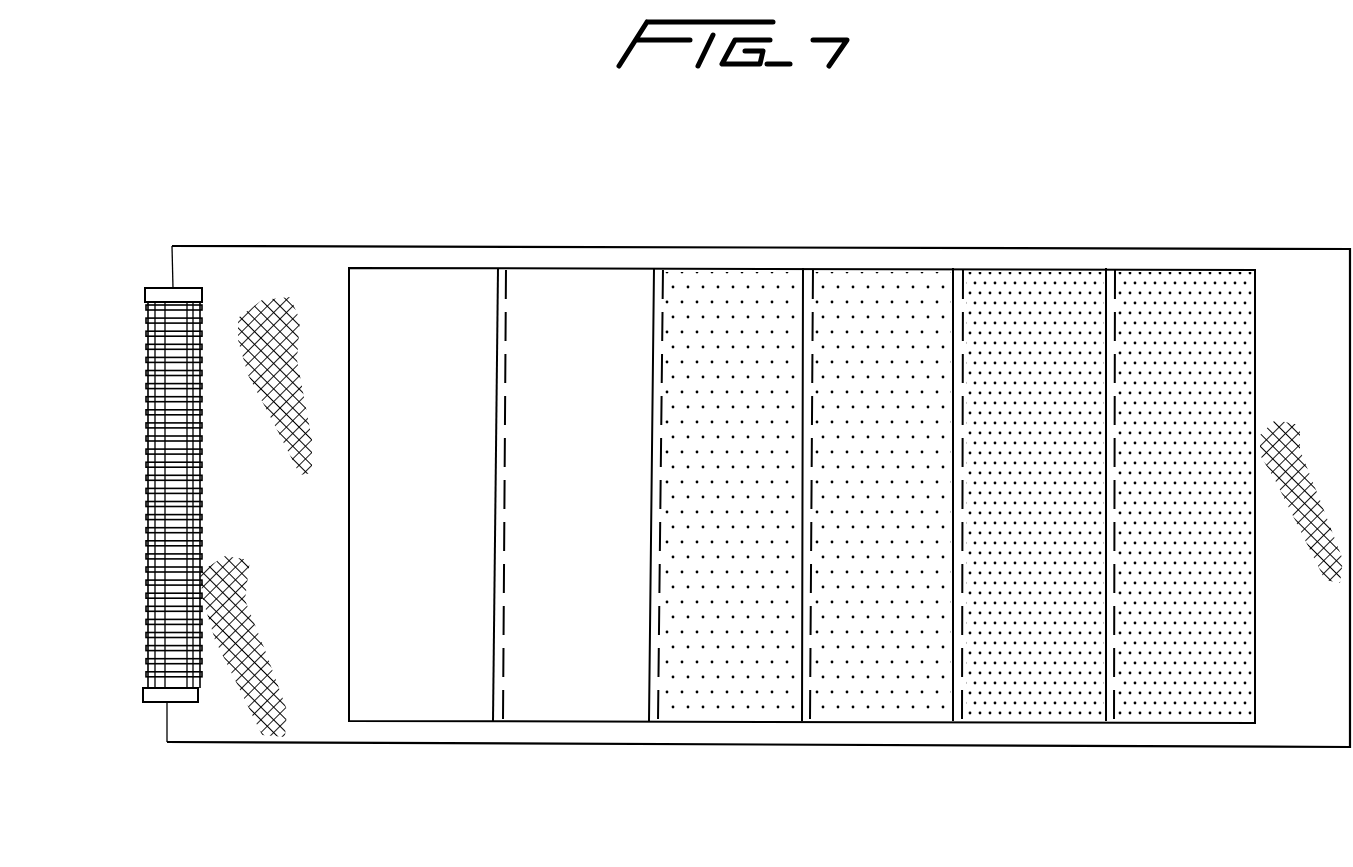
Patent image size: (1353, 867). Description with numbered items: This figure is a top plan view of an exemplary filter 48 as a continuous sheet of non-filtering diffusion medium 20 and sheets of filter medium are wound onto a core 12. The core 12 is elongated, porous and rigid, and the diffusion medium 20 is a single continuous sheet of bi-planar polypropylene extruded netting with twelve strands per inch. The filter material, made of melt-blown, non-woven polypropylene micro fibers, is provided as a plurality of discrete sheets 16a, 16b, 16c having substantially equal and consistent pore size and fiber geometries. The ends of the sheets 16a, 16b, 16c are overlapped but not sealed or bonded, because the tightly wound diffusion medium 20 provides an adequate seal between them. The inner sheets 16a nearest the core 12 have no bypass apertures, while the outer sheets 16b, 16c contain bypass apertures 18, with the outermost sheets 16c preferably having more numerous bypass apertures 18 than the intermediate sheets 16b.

The core 12 is at (143, 675).
The inner sheets of filter medium 16a is at (580, 268).
The intermediate sheets of filter medium 16b is at (886, 268).
The outermost sheets of filter medium 16c is at (1158, 270).
The bypass apertures 18 is at (757, 690).
The diffusion medium 20 is at (269, 283).
The filter 48 is at (435, 750).